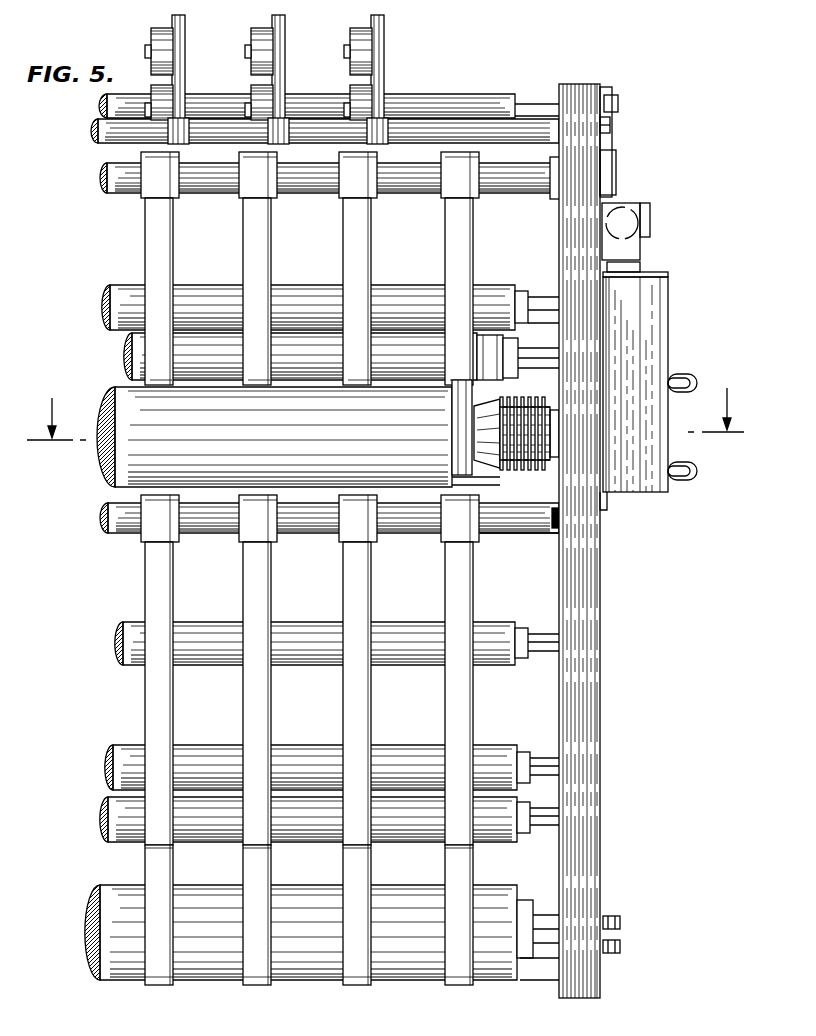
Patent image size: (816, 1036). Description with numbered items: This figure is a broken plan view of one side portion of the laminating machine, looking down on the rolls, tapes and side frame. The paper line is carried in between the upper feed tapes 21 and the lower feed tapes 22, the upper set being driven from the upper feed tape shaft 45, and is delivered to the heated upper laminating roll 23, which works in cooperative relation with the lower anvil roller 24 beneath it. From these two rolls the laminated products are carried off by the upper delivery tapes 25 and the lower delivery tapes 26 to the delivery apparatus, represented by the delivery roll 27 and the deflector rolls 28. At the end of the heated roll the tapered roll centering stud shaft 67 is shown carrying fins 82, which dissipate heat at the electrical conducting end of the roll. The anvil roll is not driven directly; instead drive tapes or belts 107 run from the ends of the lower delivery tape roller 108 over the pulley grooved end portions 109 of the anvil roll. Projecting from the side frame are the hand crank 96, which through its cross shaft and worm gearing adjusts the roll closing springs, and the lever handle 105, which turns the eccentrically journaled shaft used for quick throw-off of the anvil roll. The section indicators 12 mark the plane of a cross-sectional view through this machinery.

The section line 12- 12 is at (385, 428).
The upper feed tapes 21 is at (244, 578).
The lower feed tapes 22 is at (246, 868).
The heated upper laminating roll 23 is at (298, 433).
The lower anvil roller 24 is at (477, 487).
The upper delivery tapes 25 is at (241, 256).
The lower delivery tapes 26 is at (242, 390).
The delivery roll 27 is at (501, 98).
The deflector rolls 28 is at (360, 88).
The upper feed tape shaft 45 is at (526, 522).
The tapered roll centering stud shaft 67 is at (484, 425).
The fins 82 is at (548, 387).
The hand crank 96 is at (696, 467).
The lever handle 105 is at (694, 387).
The drive tapes or belts 107 is at (494, 381).
The lower delivery tape roller 108 is at (124, 381).
The pulley grooved end portions 109 is at (512, 479).